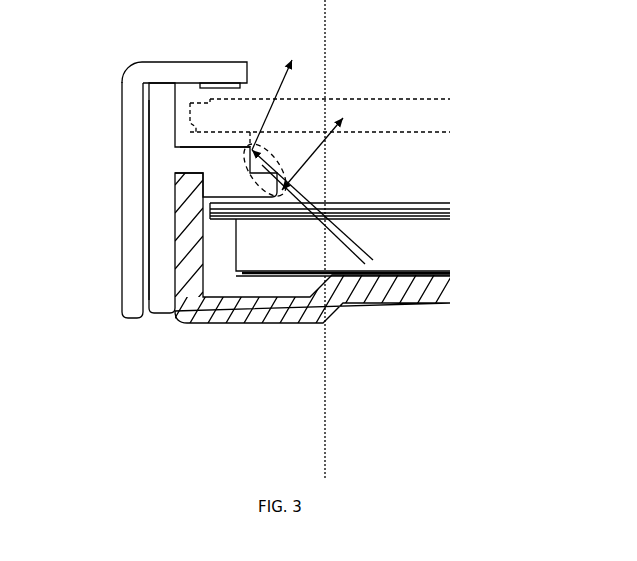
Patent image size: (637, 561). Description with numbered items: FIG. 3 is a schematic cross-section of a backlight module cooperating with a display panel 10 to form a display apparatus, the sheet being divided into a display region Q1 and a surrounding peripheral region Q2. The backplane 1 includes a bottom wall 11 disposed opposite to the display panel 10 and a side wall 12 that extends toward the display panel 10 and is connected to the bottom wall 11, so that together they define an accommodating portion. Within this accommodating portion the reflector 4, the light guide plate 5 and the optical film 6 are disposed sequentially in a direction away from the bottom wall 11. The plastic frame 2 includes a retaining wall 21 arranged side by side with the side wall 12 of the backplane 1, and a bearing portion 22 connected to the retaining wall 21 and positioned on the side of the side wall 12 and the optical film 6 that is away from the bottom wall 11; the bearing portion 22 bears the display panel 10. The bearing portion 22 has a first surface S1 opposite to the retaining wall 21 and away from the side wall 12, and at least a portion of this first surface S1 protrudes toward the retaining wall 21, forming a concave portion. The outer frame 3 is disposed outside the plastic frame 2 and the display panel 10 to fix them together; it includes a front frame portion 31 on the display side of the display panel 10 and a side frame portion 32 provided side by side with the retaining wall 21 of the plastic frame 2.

The backplane 1 is at (320, 283).
The bottom wall 11 is at (255, 310).
The side wall 12 is at (185, 292).
The plastic frame 2 is at (165, 198).
The retaining wall 21 is at (162, 232).
The bearing portion 22 is at (240, 168).
The outer frame 3 is at (147, 190).
The front frame portion 31 is at (175, 73).
The side frame portion 32 is at (118, 200).
The reflector 4 is at (427, 273).
The light guide plate 5 is at (363, 240).
The optical film 6 is at (418, 202).
The display panel 10 is at (345, 113).
The first surface S1 is at (284, 178).
The display region Q1 is at (422, 49).
The peripheral region Q2 is at (204, 51).